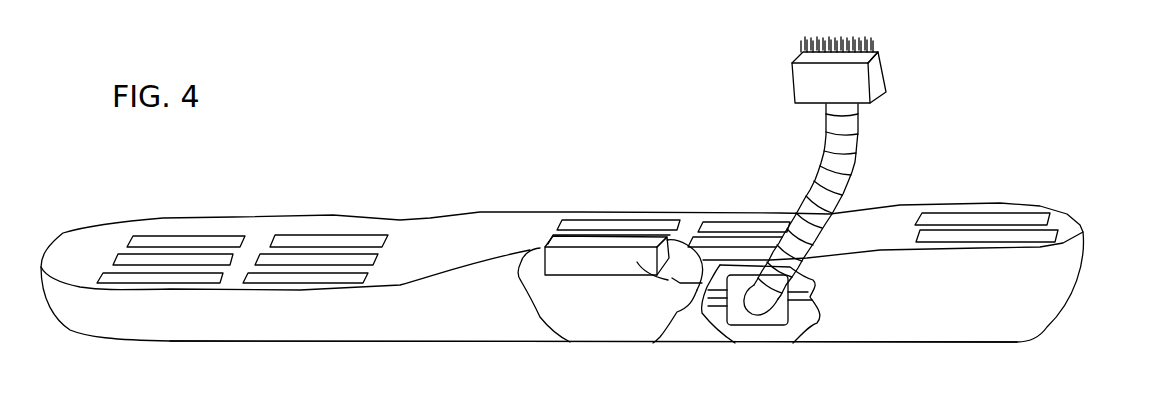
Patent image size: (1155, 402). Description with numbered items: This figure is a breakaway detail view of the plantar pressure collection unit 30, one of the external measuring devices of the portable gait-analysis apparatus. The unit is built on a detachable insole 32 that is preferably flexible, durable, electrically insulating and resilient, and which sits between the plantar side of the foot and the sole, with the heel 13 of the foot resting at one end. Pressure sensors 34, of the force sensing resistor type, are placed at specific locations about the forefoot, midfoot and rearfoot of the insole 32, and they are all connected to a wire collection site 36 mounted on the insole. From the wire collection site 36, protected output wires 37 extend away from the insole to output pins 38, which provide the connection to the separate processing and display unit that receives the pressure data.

The heel 13 is at (1083, 270).
The plantar pressure collection unit 30 is at (355, 213).
The insole 32 is at (910, 318).
The pressure sensors 34 is at (195, 240).
The wire collection site 36 is at (772, 325).
The protected output wires 37 is at (857, 183).
The output pins 38 is at (888, 63).